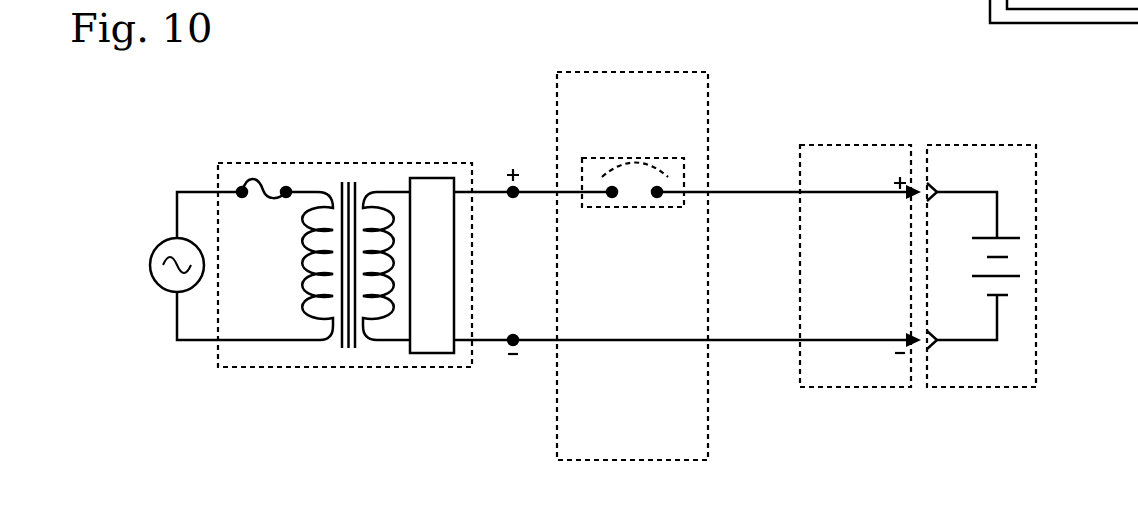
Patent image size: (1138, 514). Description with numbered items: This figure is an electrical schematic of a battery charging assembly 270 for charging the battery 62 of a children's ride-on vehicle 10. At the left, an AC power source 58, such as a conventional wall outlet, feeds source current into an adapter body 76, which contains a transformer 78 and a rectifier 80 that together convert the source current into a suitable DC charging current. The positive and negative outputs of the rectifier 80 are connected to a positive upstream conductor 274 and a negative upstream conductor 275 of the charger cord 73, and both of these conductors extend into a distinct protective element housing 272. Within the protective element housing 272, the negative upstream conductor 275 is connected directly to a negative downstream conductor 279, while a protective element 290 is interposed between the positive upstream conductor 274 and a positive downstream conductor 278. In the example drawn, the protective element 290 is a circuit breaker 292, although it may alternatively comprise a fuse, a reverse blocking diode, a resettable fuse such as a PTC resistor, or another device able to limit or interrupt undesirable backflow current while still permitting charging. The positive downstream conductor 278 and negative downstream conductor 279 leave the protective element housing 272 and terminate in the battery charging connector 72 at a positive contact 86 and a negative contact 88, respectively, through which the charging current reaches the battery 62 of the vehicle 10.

The children's ride-on vehicle 10 is at (1039, 170).
The AC power source 58 is at (147, 267).
The battery 62 is at (1023, 256).
The battery charging connector 72 is at (785, 359).
The charger cord 73 is at (752, 180).
The adapter body 76 is at (262, 370).
The transformer 78 is at (352, 178).
The rectifier 80 is at (430, 355).
The positive contact 86 is at (906, 201).
The negative contact 88 is at (906, 328).
The battery charging assembly 270 is at (291, 96).
The protective element housing 272 is at (643, 70).
The positive upstream conductor 274 is at (537, 199).
The negative upstream conductor 275 is at (537, 335).
The positive downstream conductor 278 is at (768, 200).
The negative downstream conductor 279 is at (768, 334).
The protective element 290 is at (600, 156).
The circuit breaker 292 is at (631, 166).